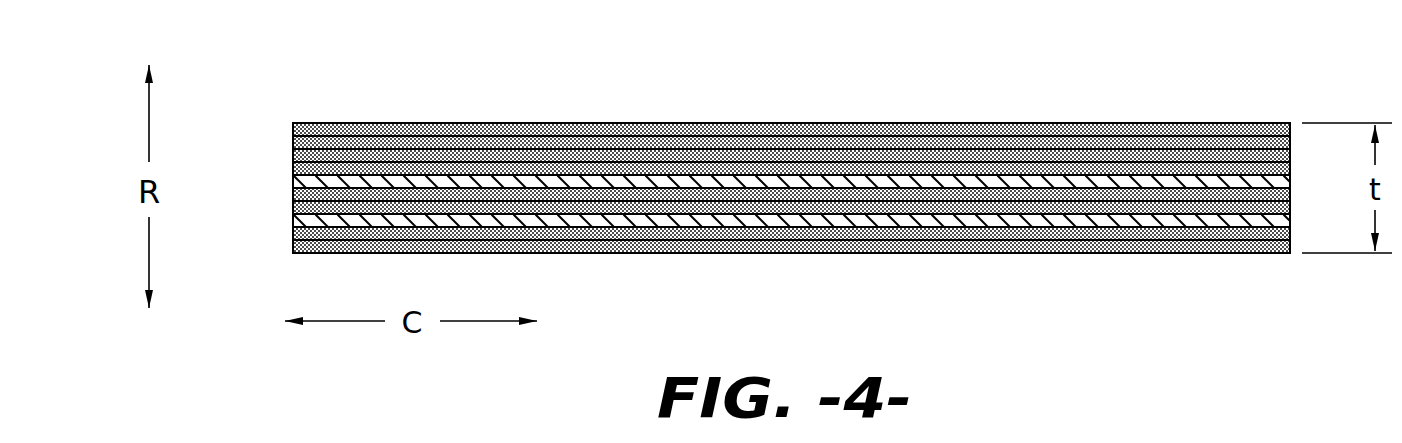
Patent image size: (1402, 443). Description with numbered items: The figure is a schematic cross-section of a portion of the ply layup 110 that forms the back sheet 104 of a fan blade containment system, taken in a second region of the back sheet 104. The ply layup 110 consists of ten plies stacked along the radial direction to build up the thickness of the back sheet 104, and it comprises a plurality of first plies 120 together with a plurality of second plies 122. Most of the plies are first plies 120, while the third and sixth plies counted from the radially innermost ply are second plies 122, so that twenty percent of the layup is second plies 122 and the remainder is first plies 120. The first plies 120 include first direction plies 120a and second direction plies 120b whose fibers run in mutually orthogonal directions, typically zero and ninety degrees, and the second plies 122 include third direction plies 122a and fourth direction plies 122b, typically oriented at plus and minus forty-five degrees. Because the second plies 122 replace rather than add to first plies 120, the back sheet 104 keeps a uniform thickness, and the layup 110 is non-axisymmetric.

The back sheet 104 is at (438, 82).
The ply layup 110 is at (972, 124).
The first plies 120 is at (293, 157).
The second plies 122 is at (305, 220).
The first direction plies 120a is at (1043, 243).
The second direction plies 120b is at (1173, 230).
The third direction plies 122a is at (675, 217).
The fourth direction plies 122b is at (855, 180).